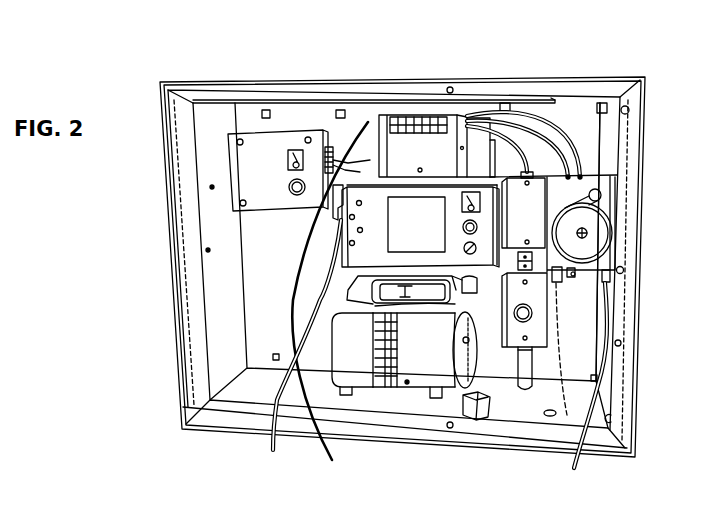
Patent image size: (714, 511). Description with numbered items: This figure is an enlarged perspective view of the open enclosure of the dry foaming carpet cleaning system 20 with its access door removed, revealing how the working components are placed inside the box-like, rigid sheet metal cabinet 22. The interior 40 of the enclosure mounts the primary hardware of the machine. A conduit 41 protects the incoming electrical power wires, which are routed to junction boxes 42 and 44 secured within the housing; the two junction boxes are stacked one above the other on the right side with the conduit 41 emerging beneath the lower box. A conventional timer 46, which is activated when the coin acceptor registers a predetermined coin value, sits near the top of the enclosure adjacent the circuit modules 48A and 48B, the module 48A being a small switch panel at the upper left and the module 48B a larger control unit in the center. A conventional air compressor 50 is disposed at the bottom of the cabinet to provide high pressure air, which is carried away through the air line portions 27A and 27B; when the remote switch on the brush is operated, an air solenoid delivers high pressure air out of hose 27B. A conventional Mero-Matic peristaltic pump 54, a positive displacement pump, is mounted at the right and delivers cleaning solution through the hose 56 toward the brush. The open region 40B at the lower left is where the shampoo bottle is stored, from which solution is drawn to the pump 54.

The dry foaming carpet cleaning system 20 is at (479, 53).
The cabinet 22 is at (244, 84).
The interior 40 is at (214, 113).
The region 40B is at (235, 322).
The peristaltic pump 54 is at (628, 177).
The circuit module 48A is at (278, 192).
The timer 46 is at (390, 115).
The circuit module 48B is at (420, 226).
The junction box 44 is at (553, 227).
The junction box 42 is at (535, 313).
The conduit 41 is at (530, 371).
The hose 56 is at (575, 457).
The air line 27A is at (462, 293).
The air hose 27B is at (273, 435).
The air compressor 50 is at (363, 383).